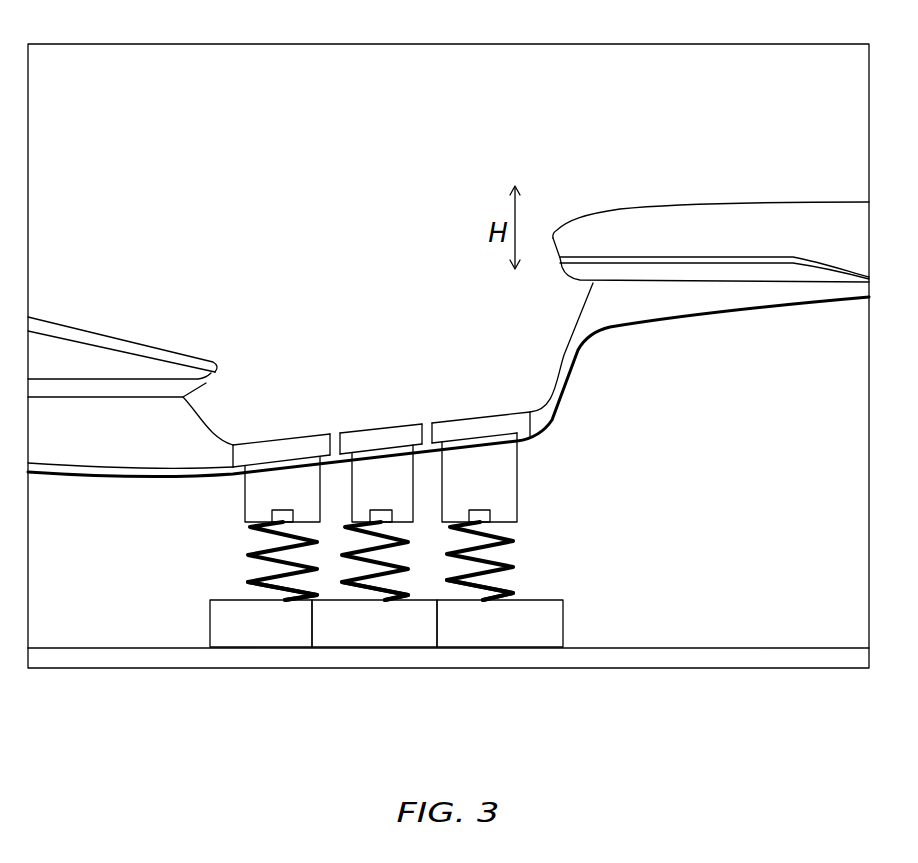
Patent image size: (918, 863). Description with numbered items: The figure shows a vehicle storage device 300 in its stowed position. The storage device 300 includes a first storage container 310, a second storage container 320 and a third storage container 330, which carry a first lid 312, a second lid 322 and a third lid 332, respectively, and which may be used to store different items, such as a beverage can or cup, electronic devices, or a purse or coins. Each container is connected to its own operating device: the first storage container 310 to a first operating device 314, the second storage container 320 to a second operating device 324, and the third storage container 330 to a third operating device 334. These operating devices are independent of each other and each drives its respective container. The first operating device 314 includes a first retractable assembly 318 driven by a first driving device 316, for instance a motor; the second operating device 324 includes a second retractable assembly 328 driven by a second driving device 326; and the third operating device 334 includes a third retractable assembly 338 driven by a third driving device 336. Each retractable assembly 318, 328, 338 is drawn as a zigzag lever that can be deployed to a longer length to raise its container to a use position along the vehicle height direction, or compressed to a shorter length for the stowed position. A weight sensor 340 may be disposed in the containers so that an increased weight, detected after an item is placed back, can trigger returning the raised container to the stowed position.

The storage device 300 is at (571, 58).
The first storage container 310 is at (282, 434).
The first lid 312 is at (252, 452).
The first operating device 314 is at (240, 552).
The first driving device 316 is at (282, 635).
The first retractable assembly 318 is at (253, 578).
The second storage container 320 is at (380, 425).
The second lid 322 is at (353, 442).
The second operating device 324 is at (414, 568).
The second driving device 326 is at (357, 635).
The second retractable assembly 328 is at (342, 578).
The third storage container 330 is at (478, 414).
The third lid 332 is at (448, 432).
The third operating device 334 is at (516, 543).
The third driving device 336 is at (475, 635).
The third retractable assembly 338 is at (515, 568).
The weight sensor 340 is at (283, 510).